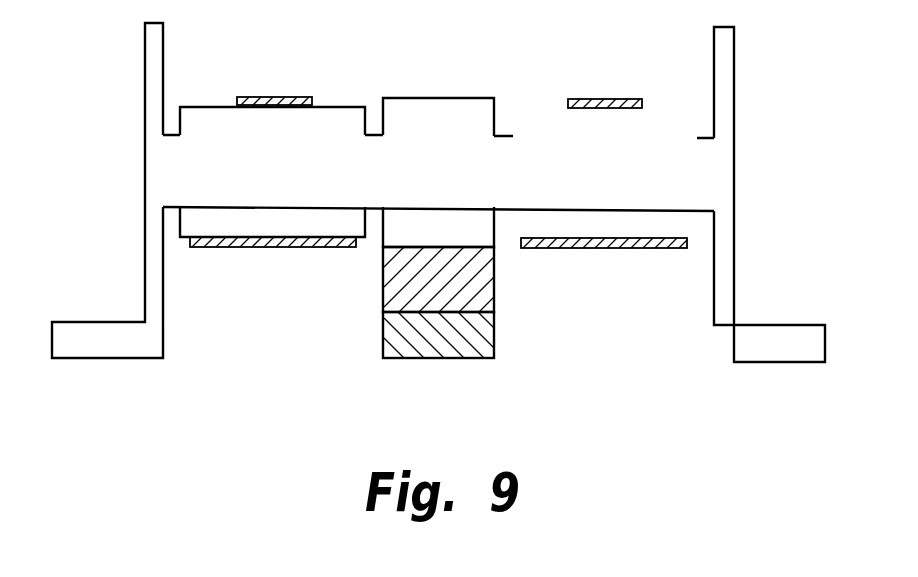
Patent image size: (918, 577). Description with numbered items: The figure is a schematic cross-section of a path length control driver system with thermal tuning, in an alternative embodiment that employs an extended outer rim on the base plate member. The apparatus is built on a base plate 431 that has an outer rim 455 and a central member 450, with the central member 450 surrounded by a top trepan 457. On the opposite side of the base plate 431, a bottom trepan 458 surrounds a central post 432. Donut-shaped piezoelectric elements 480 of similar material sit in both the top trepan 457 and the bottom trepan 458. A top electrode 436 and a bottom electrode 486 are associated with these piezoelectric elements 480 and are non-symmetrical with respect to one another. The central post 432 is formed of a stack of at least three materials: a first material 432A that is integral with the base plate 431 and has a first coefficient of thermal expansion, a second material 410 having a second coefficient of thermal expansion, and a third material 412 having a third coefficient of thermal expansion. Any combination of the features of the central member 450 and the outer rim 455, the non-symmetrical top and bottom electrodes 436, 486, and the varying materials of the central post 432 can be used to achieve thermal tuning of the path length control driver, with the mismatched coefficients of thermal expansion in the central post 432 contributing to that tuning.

The base plate 431 is at (145, 161).
The outer rim 455 is at (734, 62).
The top trepan 457 is at (238, 70).
The top electrode 436 is at (290, 97).
The central member 450 is at (454, 98).
The piezoelectric elements 480 is at (680, 108).
The bottom trepan 458 is at (248, 312).
The bottom electrode 486 is at (273, 247).
The first material 432A is at (473, 228).
The second material 410 is at (476, 297).
The third material 412 is at (466, 342).
The central post 432 is at (485, 308).